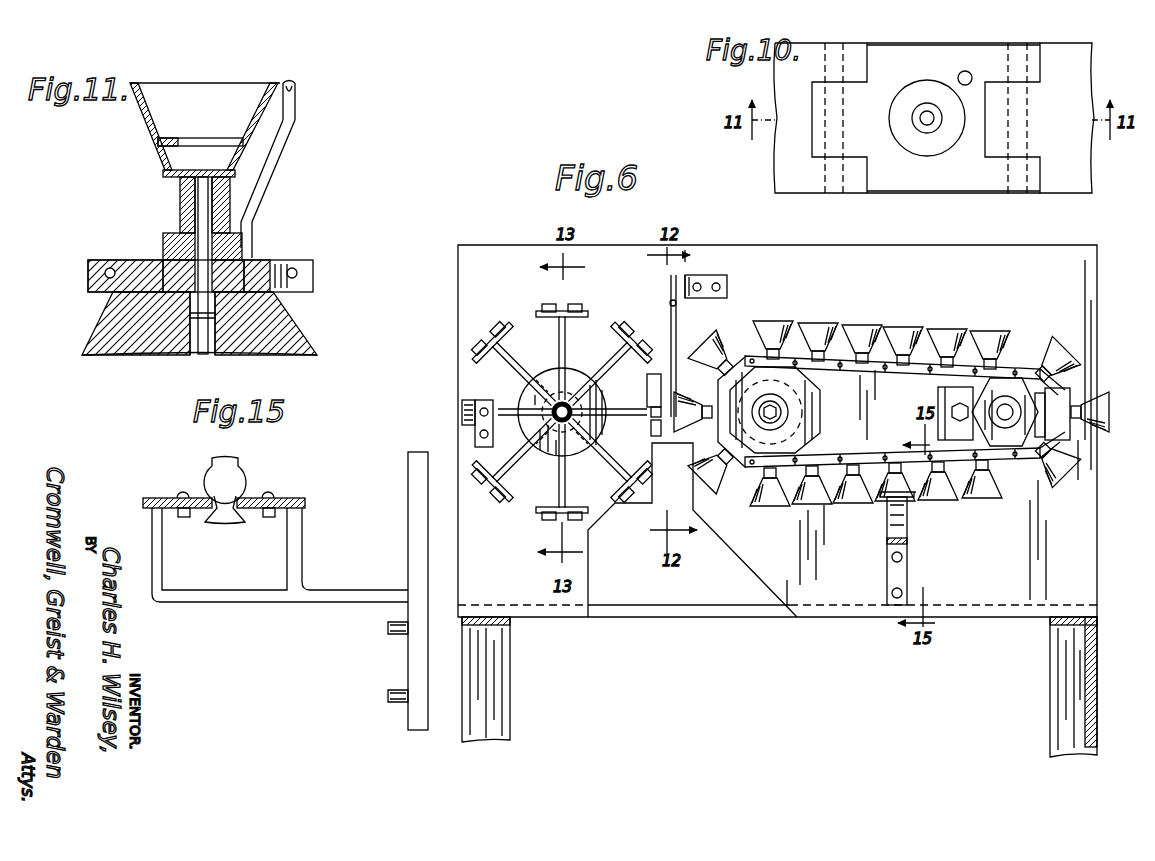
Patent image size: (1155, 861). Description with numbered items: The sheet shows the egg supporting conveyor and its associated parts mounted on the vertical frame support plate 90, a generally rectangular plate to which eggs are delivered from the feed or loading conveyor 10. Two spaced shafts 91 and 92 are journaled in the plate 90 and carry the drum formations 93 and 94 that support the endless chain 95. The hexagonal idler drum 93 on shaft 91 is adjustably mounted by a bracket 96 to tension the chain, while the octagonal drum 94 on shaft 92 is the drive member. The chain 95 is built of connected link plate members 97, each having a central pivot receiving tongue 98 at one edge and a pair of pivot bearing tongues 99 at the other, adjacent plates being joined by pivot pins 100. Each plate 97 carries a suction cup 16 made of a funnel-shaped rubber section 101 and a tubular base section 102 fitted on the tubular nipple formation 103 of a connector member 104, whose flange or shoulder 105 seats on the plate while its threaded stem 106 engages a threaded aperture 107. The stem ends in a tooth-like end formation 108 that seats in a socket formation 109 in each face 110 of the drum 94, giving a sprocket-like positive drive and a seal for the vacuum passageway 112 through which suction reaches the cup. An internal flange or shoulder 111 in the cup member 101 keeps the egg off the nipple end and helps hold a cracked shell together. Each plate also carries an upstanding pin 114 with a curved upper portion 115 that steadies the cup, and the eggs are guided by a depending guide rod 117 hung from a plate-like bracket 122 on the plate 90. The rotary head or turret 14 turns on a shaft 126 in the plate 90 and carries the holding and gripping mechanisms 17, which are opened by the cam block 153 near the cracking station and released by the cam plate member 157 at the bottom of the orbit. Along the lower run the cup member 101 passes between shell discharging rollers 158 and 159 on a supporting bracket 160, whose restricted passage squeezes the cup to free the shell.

In FIG. 6, the feed or loading conveyor 10 is at (845, 348).
In FIG. 6, the rotary head or turret 14 is at (588, 307).
In FIG. 6, the suction cup 16 is at (780, 320).
In FIG. 6, the holding or gripping mechanism 17 is at (512, 325).
In FIG. 15, the vertical frame support plate 90 is at (408, 547).
In FIG. 6, the vertical frame support plate 90 is at (840, 253).
In FIG. 6, the shaft 91 is at (1043, 388).
In FIG. 6, the shaft 92 is at (784, 412).
In FIG. 6, the idler supporting drum 93 is at (1043, 443).
In FIG. 11, the drive drum 94 is at (297, 303).
In FIG. 6, the drive drum 94 is at (812, 412).
In FIG. 6, the endless chain 95 is at (853, 457).
In FIG. 6, the bracket 96 is at (940, 395).
In FIG. 11, the link plate member 97 is at (258, 265).
In FIG. 10, the link plate member 97 is at (927, 195).
In FIG. 10, the central pivot receiving tongue 98 is at (812, 145).
In FIG. 10, the pivot bearing tongues 99 is at (1032, 56).
In FIG. 10, the pivot pins 100 is at (830, 185).
In FIG. 11, the funnel-shaped rubber section 101 is at (262, 94).
In FIG. 15, the funnel-shaped rubber section 101 is at (224, 522).
In FIG. 11, the tubular base section 102 is at (179, 190).
In FIG. 11, the tubular nipple formation 103 is at (181, 204).
In FIG. 10, the tubular nipple formation 103 is at (926, 104).
In FIG. 11, the connector member 104 is at (165, 235).
In FIG. 11, the flange or shoulder 105 is at (251, 233).
In FIG. 10, the flange or shoulder 105 is at (903, 141).
In FIG. 11, the threaded stem 106 is at (121, 299).
In FIG. 11, the threaded aperture 107 is at (276, 268).
In FIG. 11, the tooth-like end formation 108 is at (193, 318).
In FIG. 11, the socket formation or recess 109 is at (218, 344).
In FIG. 11, the face 110 is at (137, 295).
In FIG. 11, the internal flange or shoulder 111 is at (172, 138).
In FIG. 11, the vacuum passageway 112 is at (200, 353).
In FIG. 11, the upstanding pin 114 is at (272, 153).
In FIG. 6, the upstanding pin 114 is at (992, 322).
In FIG. 11, the curved upper portion 115 is at (297, 92).
In FIG. 6, the guide rod 117 is at (678, 346).
In FIG. 6, the plate-like bracket 122 is at (700, 277).
In FIG. 6, the shaft 126 is at (567, 425).
In FIG. 6, the cam block 153 is at (655, 373).
In FIG. 6, the cam plate member 157 is at (458, 412).
In FIG. 15, the shell discharging disk or roller 158 is at (160, 498).
In FIG. 6, the shell discharging disk or roller 158 is at (882, 499).
In FIG. 15, the shell discharging disk or roller 159 is at (290, 498).
In FIG. 15, the supporting bracket 160 is at (270, 602).
In FIG. 6, the supporting bracket 160 is at (887, 548).